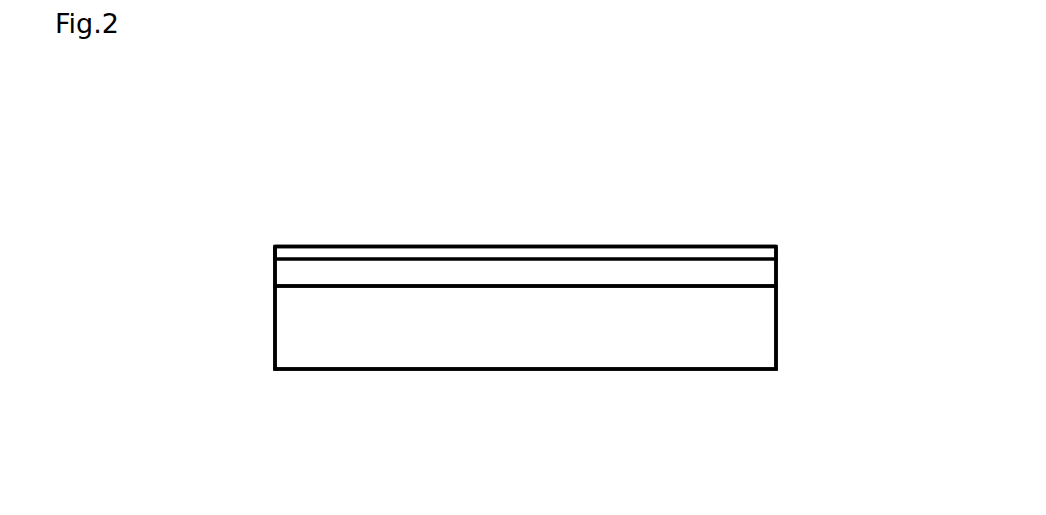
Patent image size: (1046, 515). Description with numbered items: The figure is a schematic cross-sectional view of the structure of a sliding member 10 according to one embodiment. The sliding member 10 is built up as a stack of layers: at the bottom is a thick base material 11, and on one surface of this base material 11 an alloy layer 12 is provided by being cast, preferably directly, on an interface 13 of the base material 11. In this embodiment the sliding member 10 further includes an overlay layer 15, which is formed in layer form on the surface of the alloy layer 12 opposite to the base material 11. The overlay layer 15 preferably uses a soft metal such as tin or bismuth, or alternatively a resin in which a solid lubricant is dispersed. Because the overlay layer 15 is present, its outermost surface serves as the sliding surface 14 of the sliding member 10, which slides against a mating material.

The sliding member 10 is at (651, 193).
The base material 11 is at (274, 343).
The alloy layer 12 is at (274, 274).
The interface 13 is at (742, 286).
The sliding surface 14 is at (722, 245).
The overlay layer 15 is at (274, 250).